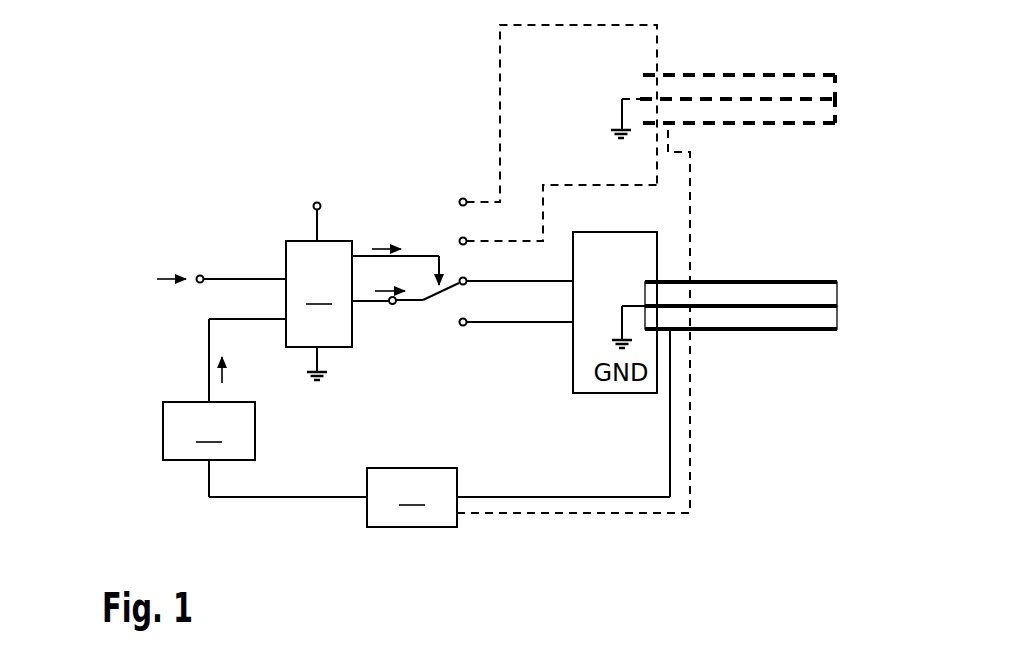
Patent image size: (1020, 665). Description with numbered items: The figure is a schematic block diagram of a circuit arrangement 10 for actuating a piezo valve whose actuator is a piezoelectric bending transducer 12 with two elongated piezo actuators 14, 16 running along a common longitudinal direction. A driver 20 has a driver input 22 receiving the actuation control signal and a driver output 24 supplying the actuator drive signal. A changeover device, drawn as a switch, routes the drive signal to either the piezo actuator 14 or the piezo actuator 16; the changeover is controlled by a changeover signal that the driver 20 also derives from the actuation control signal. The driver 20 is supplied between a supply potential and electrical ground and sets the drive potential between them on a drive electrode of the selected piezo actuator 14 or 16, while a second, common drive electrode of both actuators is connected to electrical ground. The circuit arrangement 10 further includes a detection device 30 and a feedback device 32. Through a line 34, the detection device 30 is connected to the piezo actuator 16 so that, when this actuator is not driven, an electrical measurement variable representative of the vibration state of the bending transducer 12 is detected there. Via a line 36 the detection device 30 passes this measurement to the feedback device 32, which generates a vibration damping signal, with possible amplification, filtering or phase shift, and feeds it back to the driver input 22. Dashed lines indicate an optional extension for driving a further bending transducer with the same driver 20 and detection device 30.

The circuit arrangement 10 is at (330, 108).
The piezoelectric bending transducer 12 is at (744, 299).
The piezo actuator 14 is at (803, 291).
The piezo actuator 16 is at (803, 320).
The driver 20 is at (297, 294).
The driver input 22 is at (256, 262).
The driver output 24 is at (409, 324).
The detection device 30 is at (518, 428).
The feedback device 32 is at (209, 431).
The line 34 is at (672, 400).
The line 36 is at (260, 498).